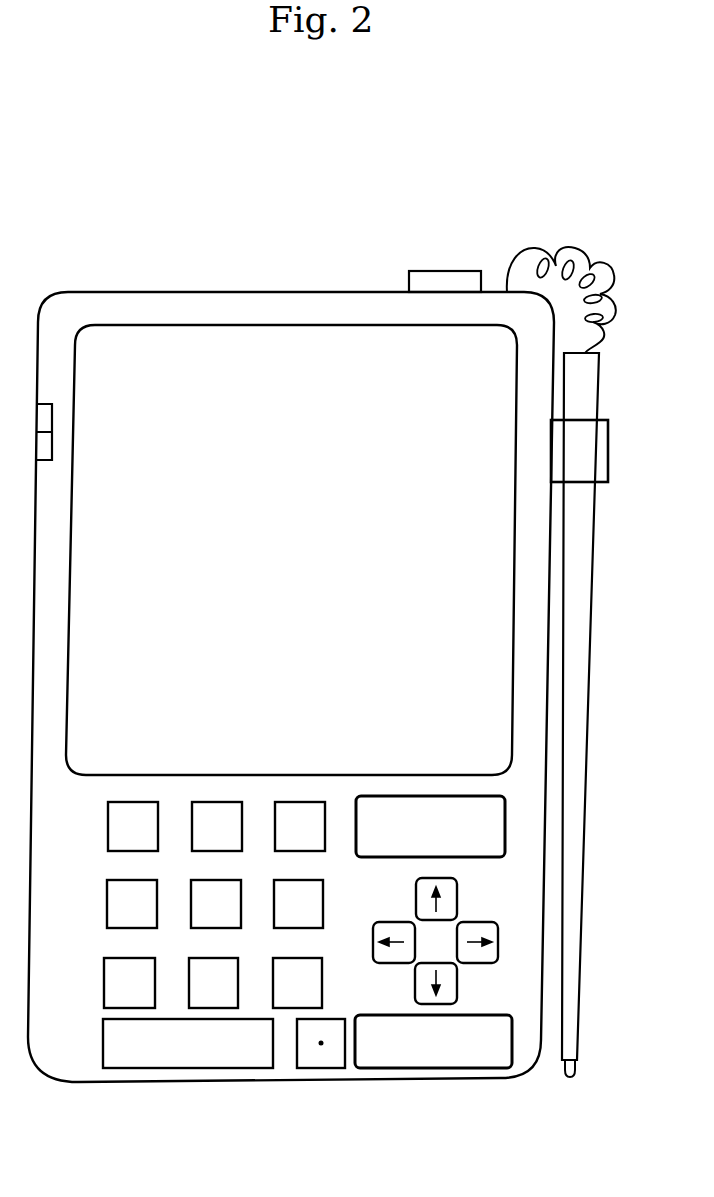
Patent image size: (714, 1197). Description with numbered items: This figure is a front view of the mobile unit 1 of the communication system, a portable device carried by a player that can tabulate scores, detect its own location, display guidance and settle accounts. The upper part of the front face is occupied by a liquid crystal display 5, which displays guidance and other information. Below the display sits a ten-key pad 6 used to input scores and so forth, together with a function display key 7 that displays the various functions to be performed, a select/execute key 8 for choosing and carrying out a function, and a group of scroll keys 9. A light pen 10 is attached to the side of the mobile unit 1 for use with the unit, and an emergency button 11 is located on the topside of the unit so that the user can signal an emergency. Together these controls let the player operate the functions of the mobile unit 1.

The mobile unit 1 is at (82, 282).
The liquid crystal display 5 is at (162, 325).
The ten-key pad 6 is at (183, 977).
The function display key 7 is at (487, 812).
The select/execute key 8 is at (435, 1058).
The scroll keys 9 is at (443, 938).
The light pen 10 is at (572, 959).
The emergency button 11 is at (440, 270).